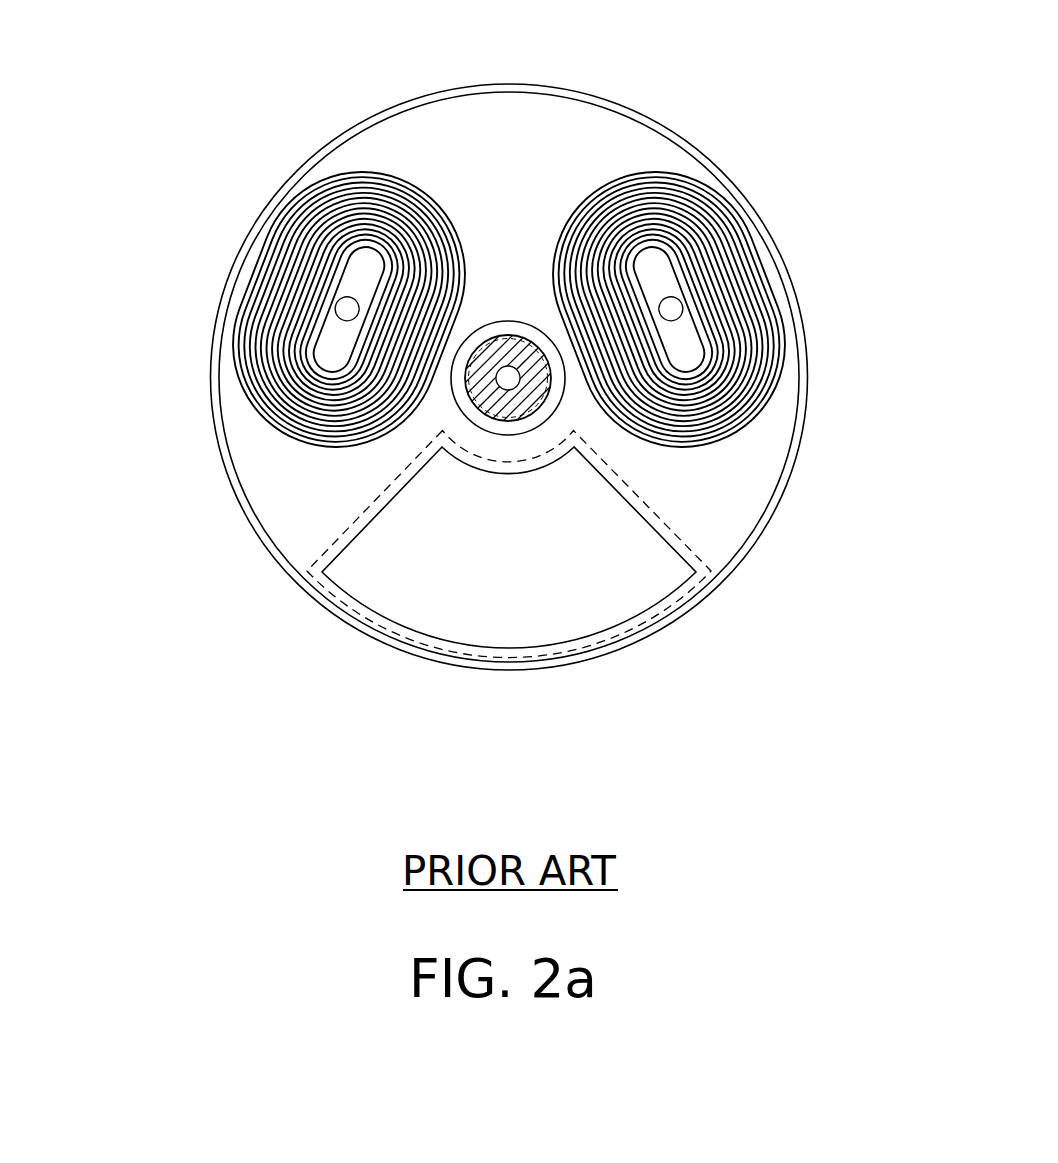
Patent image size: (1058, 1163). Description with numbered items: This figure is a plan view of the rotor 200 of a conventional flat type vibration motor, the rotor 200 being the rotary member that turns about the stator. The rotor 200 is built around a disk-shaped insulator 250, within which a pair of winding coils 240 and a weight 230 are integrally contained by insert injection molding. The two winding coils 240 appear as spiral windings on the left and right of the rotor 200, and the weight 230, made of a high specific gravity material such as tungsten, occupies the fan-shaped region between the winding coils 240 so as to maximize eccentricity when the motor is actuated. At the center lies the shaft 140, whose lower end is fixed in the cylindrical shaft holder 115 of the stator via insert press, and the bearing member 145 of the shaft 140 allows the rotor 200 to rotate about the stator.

The rotor assembly 200 is at (797, 128).
The insulator 250 is at (557, 118).
The winding coils 240 is at (258, 363).
The shaft holder 115 is at (503, 427).
The shaft 140 is at (533, 385).
The bearing member 145 is at (517, 380).
The weight 230 is at (413, 598).